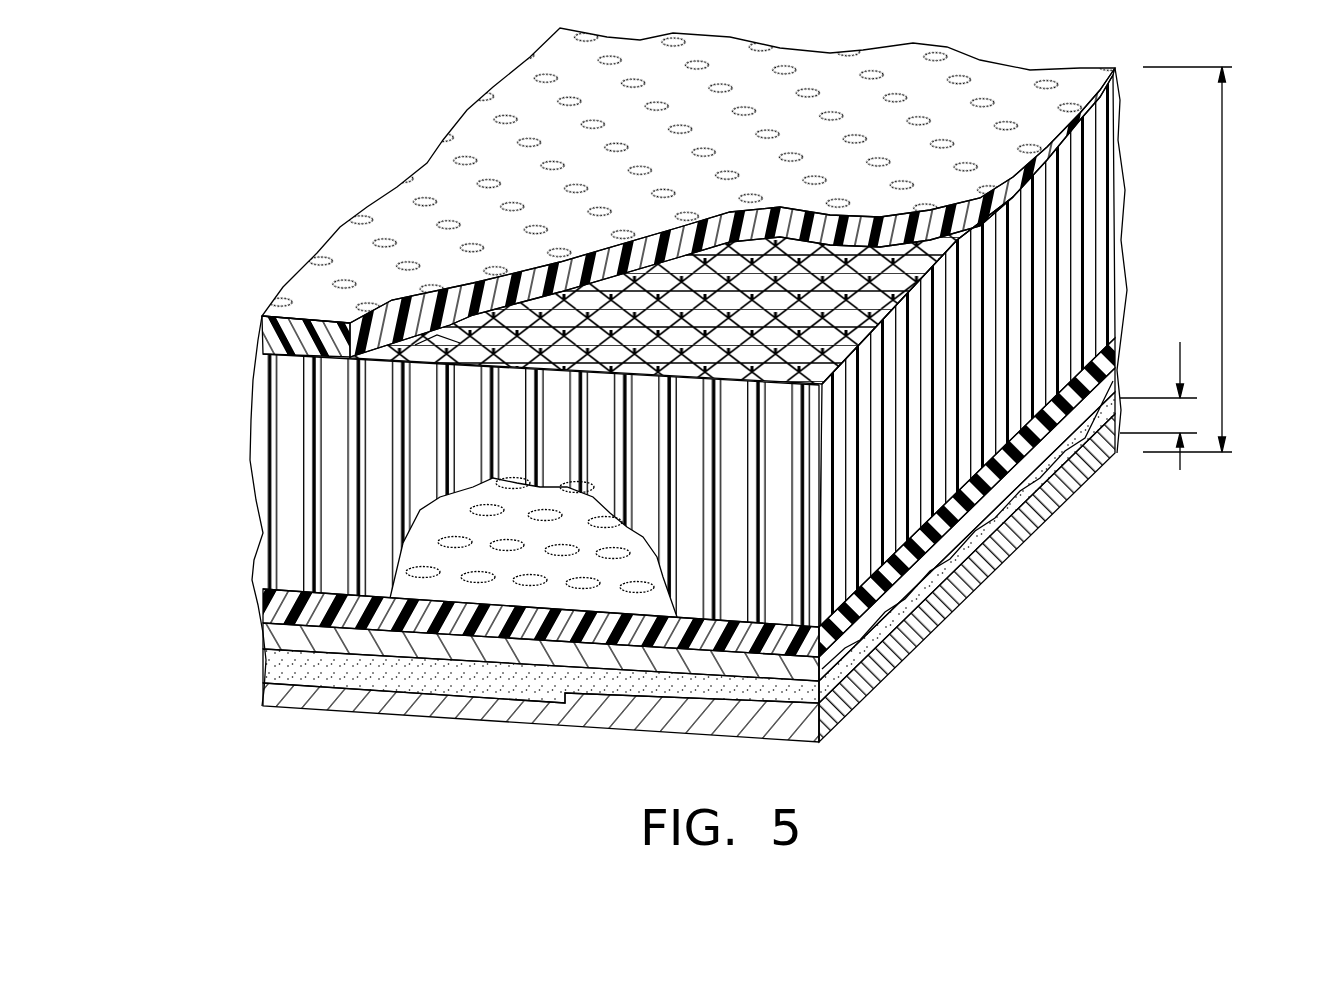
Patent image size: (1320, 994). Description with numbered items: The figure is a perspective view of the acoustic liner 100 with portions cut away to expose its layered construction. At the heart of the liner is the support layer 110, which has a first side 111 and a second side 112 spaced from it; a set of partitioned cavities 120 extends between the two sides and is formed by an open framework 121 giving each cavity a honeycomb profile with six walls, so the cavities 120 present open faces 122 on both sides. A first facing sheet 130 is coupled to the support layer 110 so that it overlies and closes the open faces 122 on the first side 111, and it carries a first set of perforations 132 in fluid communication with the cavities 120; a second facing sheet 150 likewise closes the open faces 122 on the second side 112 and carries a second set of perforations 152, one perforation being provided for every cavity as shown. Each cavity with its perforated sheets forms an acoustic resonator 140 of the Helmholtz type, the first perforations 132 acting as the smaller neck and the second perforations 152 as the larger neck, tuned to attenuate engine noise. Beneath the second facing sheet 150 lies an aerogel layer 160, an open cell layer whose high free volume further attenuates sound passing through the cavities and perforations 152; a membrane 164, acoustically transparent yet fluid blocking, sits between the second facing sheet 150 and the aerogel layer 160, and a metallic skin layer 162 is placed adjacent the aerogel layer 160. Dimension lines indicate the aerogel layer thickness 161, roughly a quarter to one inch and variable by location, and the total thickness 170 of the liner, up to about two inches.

The acoustic liner 100 is at (300, 170).
The support layer 110 is at (240, 476).
The first side 111 is at (258, 317).
The second side 112 is at (262, 612).
The partitioned cavities 120 is at (630, 327).
The open framework 121 is at (313, 413).
The open faces 122 is at (437, 335).
The first facing sheet 130 is at (275, 288).
The first set of perforations 132 is at (420, 195).
The acoustic resonator 140 is at (703, 253).
The second facing sheet 150 is at (245, 598).
The second set of perforations 152 is at (427, 562).
The aerogel layer 160 is at (910, 623).
The aerogel layer thickness 161 is at (1180, 342).
The metallic skin layer 162 is at (837, 715).
The membrane 164 is at (938, 557).
The total thickness 170 is at (1222, 262).